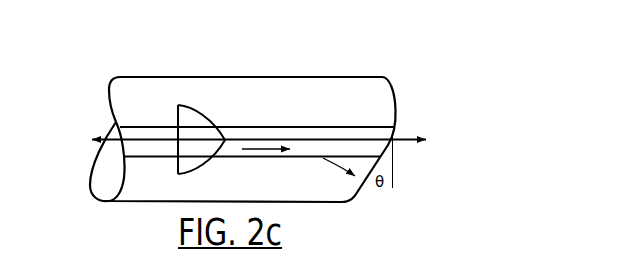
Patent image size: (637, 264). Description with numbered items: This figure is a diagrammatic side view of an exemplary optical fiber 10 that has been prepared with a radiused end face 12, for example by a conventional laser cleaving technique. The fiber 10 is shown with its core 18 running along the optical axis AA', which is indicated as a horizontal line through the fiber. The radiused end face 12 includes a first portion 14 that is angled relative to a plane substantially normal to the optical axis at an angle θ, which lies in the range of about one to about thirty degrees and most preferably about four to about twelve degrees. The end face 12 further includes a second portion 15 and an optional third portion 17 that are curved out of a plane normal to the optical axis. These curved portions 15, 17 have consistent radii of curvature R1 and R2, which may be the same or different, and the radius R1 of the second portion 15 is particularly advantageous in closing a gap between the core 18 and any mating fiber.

The fiber 10 is at (307, 88).
The radiused end face 12 is at (406, 120).
The first portion 14 is at (386, 152).
The second portion 15 is at (386, 90).
The third portion 17 is at (345, 204).
The core 18 is at (147, 133).
The radius of curvature R1 is at (383, 92).
The radius of curvature R2 is at (346, 195).